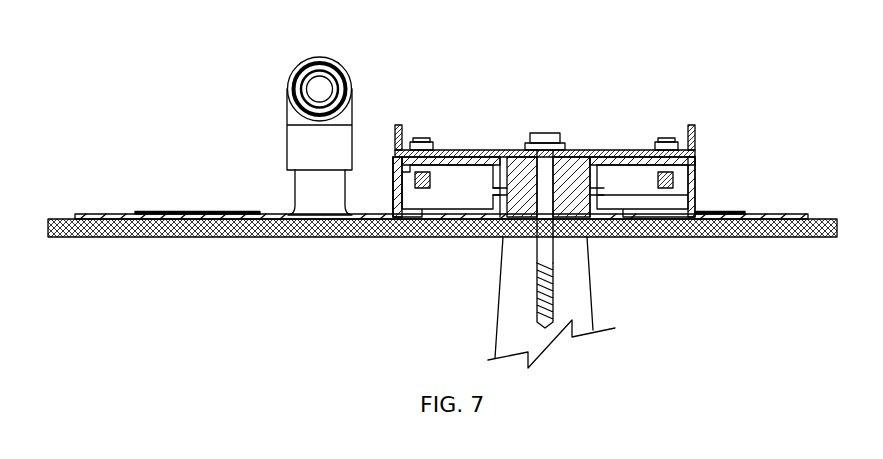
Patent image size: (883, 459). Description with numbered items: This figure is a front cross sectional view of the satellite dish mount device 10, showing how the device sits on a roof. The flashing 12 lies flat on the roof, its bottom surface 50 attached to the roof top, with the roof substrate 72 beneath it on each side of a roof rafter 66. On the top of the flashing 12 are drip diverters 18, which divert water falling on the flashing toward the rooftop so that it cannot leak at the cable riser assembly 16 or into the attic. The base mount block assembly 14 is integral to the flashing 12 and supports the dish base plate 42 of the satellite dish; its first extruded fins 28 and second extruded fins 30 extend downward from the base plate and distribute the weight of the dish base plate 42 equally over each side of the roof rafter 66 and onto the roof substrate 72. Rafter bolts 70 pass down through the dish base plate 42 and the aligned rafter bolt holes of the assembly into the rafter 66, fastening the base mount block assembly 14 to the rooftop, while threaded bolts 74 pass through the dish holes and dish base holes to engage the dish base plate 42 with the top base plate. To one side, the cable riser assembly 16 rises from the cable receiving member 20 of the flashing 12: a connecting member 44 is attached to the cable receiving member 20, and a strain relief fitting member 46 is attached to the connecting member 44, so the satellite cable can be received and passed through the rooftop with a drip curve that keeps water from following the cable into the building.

The satellite dish mount device 10 is at (513, 60).
The flashing 12 is at (798, 215).
The base mount block assembly 14 is at (620, 150).
The cable riser assembly 16 is at (348, 69).
The drip diverters 18 is at (715, 211).
The cable receiving member 20 is at (293, 188).
The first extruded fins 28 is at (418, 217).
The second extruded fins 30 is at (495, 237).
The dish base plate 42 is at (693, 128).
The connecting member 44 is at (352, 130).
The strain relief fitting member 46 is at (302, 78).
The bottom surface 50 is at (221, 236).
The roof rafter 66 is at (580, 283).
The rafter bolts 70 is at (540, 133).
The roof substrate 72 is at (283, 235).
The threaded bolts 74 is at (420, 138).